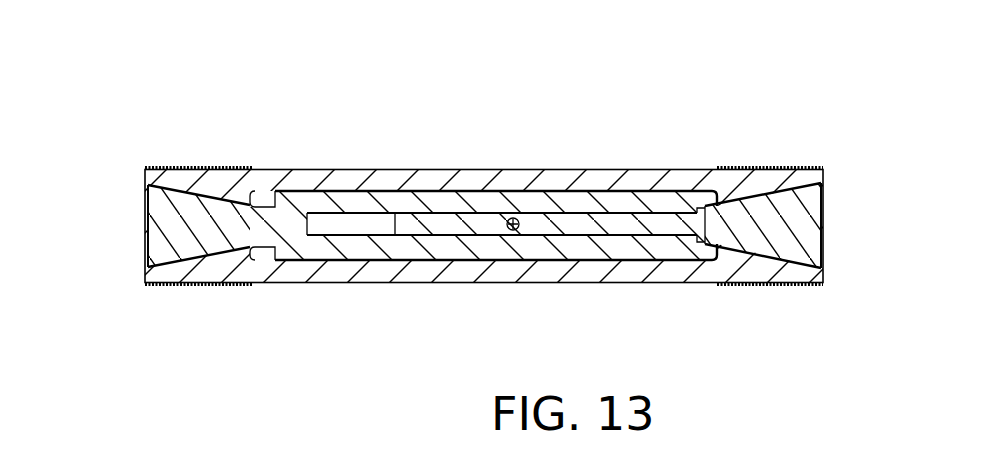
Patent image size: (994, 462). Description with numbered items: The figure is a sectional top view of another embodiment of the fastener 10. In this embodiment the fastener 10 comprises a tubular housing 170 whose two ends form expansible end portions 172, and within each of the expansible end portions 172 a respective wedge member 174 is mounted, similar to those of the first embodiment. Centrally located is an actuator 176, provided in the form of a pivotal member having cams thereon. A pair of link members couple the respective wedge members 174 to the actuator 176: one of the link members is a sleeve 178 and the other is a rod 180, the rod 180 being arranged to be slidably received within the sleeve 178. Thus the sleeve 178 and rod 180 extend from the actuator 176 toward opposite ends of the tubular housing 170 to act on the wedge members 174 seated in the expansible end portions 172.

The fastener 10 is at (398, 125).
The tubular housing 170 is at (585, 163).
The expansible end portions 172 is at (195, 168).
The wedge members 174 is at (158, 220).
The actuator 176 is at (506, 226).
The sleeve 178 is at (506, 207).
The rod 180 is at (641, 225).